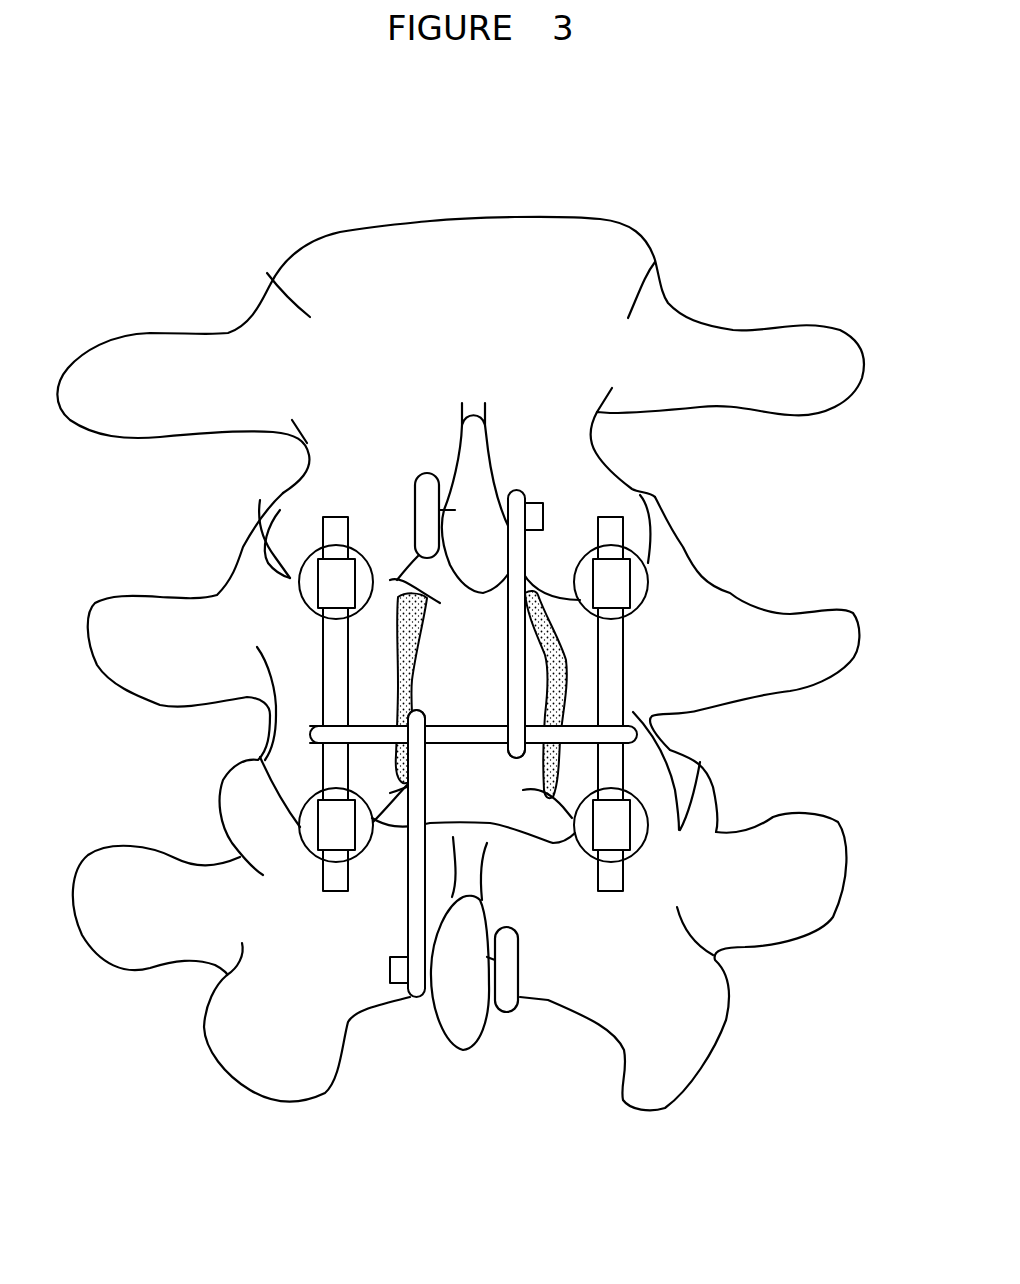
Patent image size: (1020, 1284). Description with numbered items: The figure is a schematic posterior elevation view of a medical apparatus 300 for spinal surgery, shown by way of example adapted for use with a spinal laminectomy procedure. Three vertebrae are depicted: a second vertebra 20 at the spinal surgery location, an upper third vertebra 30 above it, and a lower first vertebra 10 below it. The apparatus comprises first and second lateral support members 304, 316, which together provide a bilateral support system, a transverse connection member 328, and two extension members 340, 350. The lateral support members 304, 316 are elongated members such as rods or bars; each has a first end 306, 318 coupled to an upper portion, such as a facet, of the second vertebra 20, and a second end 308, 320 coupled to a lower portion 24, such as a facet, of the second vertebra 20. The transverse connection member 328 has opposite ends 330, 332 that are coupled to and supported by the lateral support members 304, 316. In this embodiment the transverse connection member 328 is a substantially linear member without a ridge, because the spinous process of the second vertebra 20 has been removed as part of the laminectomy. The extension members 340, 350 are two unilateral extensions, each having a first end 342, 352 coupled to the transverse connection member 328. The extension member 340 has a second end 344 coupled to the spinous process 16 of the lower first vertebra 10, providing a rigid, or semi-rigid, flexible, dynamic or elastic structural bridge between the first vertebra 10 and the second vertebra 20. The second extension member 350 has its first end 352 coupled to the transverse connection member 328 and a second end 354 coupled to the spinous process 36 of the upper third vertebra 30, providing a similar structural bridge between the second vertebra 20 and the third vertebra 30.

The medical apparatus 300 is at (692, 236).
The third vertebra 30 is at (358, 447).
The second vertebra 20 is at (788, 667).
The first vertebra 10 is at (347, 987).
The spinous process 36 is at (478, 405).
The spinous process 16 is at (458, 1031).
The lower portion 24 is at (276, 738).
The first lateral support member 304 is at (330, 645).
The first end 306 is at (328, 532).
The second end 308 is at (330, 877).
The second lateral support member 316 is at (620, 660).
The first end 318 is at (613, 526).
The second end 320 is at (616, 884).
The end 330 is at (313, 740).
The transverse connection member 328 is at (372, 733).
The end 332 is at (647, 733).
The extension member 340 is at (413, 918).
The first end 342 is at (418, 712).
The second end 344 is at (392, 977).
The second extension member 350 is at (517, 625).
The first end 352 is at (513, 760).
The second end 354 is at (518, 500).